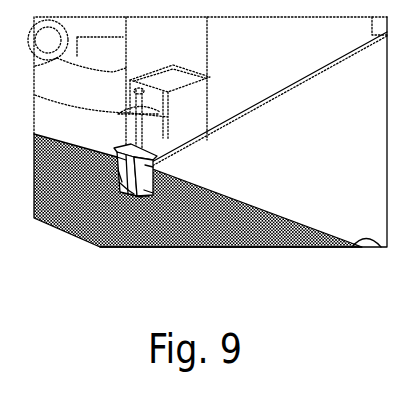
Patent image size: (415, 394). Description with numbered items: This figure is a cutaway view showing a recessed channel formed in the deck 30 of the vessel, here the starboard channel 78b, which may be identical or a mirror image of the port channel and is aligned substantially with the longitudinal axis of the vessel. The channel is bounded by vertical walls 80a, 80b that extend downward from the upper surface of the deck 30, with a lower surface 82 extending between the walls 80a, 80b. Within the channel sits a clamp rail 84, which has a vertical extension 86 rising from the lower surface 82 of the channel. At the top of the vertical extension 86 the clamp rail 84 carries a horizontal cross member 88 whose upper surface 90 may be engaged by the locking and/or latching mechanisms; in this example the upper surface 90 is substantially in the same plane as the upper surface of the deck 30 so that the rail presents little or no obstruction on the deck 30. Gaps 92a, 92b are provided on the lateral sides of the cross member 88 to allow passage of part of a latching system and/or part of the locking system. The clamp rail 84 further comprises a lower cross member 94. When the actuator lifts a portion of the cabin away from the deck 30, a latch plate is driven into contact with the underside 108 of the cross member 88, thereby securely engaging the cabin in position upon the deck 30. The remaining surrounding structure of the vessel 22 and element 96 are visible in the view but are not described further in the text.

The base frame 22 is at (355, 246).
The deck 30 is at (345, 139).
The starboard channel 78b is at (118, 172).
The vertical wall 80a is at (122, 183).
The vertical wall 80b is at (146, 192).
The lower surface 82 is at (130, 192).
The clamp rail 84 is at (142, 196).
The vertical extension 86 is at (160, 180).
The horizontal cross member 88 is at (154, 162).
The upper surface 90 is at (122, 156).
The gap 92a is at (116, 156).
The gap 92b is at (156, 170).
The lower cross member 94 is at (133, 196).
The base block 96 is at (138, 197).
The underside 108 is at (158, 177).